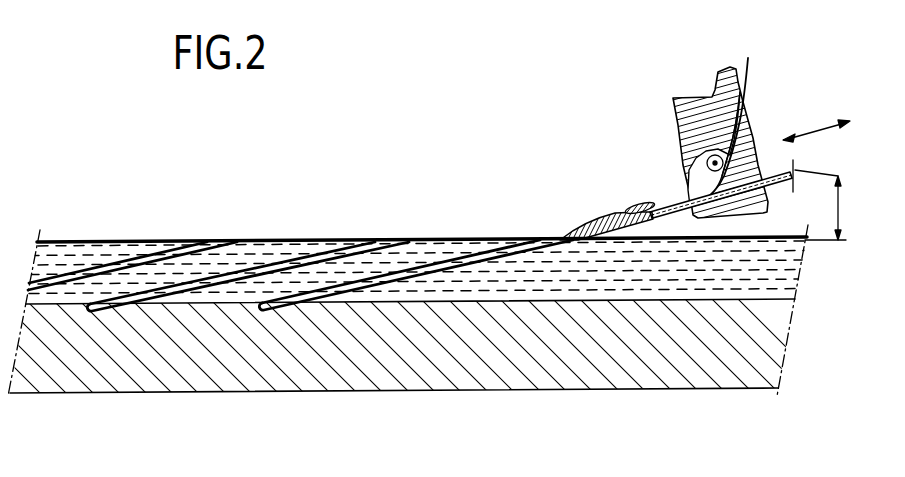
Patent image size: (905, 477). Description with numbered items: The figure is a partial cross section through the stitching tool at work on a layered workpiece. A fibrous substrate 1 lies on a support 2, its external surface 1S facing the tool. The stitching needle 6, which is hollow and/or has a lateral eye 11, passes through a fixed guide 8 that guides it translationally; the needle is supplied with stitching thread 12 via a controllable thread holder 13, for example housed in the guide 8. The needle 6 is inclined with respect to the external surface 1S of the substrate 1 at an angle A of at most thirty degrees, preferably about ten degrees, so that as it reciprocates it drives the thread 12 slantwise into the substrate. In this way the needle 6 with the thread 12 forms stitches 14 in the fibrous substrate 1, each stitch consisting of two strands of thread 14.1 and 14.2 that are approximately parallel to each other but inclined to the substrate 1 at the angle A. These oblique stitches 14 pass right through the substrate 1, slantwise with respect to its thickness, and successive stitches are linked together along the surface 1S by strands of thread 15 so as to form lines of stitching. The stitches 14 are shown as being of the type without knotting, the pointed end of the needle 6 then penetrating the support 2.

The fibrous substrate 1 is at (790, 277).
The support 2 is at (568, 377).
The stitching needle 6 is at (773, 192).
The fixed guide 8 is at (710, 123).
The lateral eye 11 is at (618, 212).
The stitching thread 12 is at (750, 74).
The controllable thread holder 13 is at (667, 133).
The stitches 14 is at (300, 310).
The strand of thread 14.1 is at (340, 277).
The strand of thread 14.2 is at (199, 245).
The strands of thread 15 is at (237, 242).
The external surface 1S is at (372, 242).
The angle A is at (820, 180).